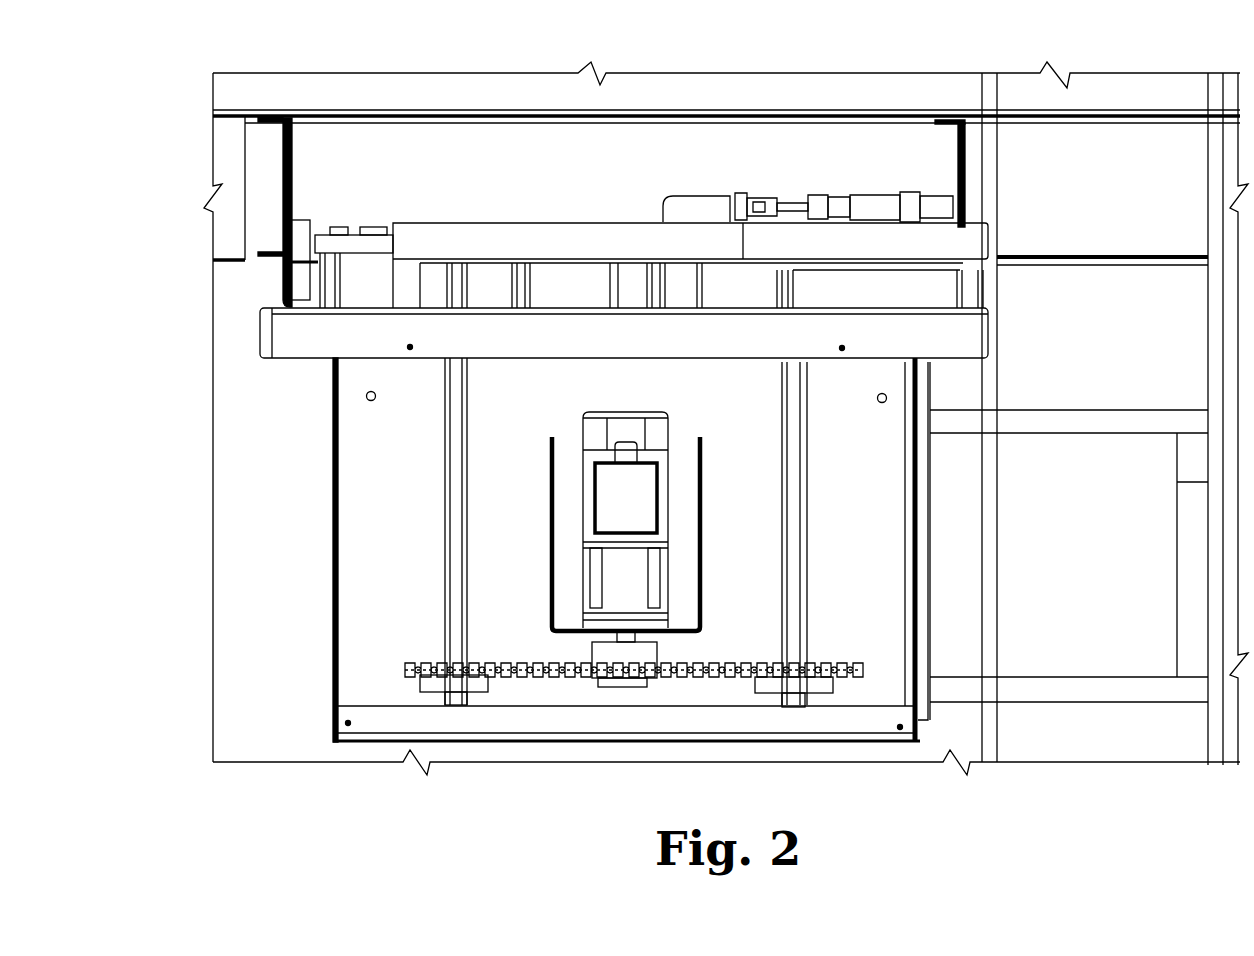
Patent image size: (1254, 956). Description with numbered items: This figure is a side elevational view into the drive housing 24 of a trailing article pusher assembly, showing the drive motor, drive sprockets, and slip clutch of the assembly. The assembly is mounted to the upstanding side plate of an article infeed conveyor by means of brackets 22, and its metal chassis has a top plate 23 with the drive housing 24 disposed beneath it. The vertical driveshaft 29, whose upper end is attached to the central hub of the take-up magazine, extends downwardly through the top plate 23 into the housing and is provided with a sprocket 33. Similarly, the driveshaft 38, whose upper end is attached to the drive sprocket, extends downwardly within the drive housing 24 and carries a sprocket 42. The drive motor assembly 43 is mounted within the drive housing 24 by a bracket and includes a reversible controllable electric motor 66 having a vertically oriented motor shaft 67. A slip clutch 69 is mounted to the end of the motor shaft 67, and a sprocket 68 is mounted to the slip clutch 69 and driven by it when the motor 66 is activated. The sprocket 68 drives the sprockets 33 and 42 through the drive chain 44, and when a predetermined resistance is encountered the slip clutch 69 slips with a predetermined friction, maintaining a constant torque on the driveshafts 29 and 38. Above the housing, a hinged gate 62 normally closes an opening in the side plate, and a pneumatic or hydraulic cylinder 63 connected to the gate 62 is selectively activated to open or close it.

The brackets 22 is at (293, 175).
The top plate 23 is at (288, 335).
The drive housing 24 is at (333, 512).
The vertical driveshaft 29 is at (795, 517).
The sprocket 33 is at (790, 684).
The driveshaft 38 is at (455, 485).
The sprocket 42 is at (470, 686).
The drive motor assembly 43 is at (710, 518).
The drive chain 44 is at (508, 663).
The hinged gate 62 is at (705, 203).
The pneumatic or hydraulic cylinder 63 is at (877, 203).
The electric motor 66 is at (668, 442).
The motor shaft 67 is at (637, 636).
The sprocket 68 is at (610, 673).
The slip clutch 69 is at (593, 658).